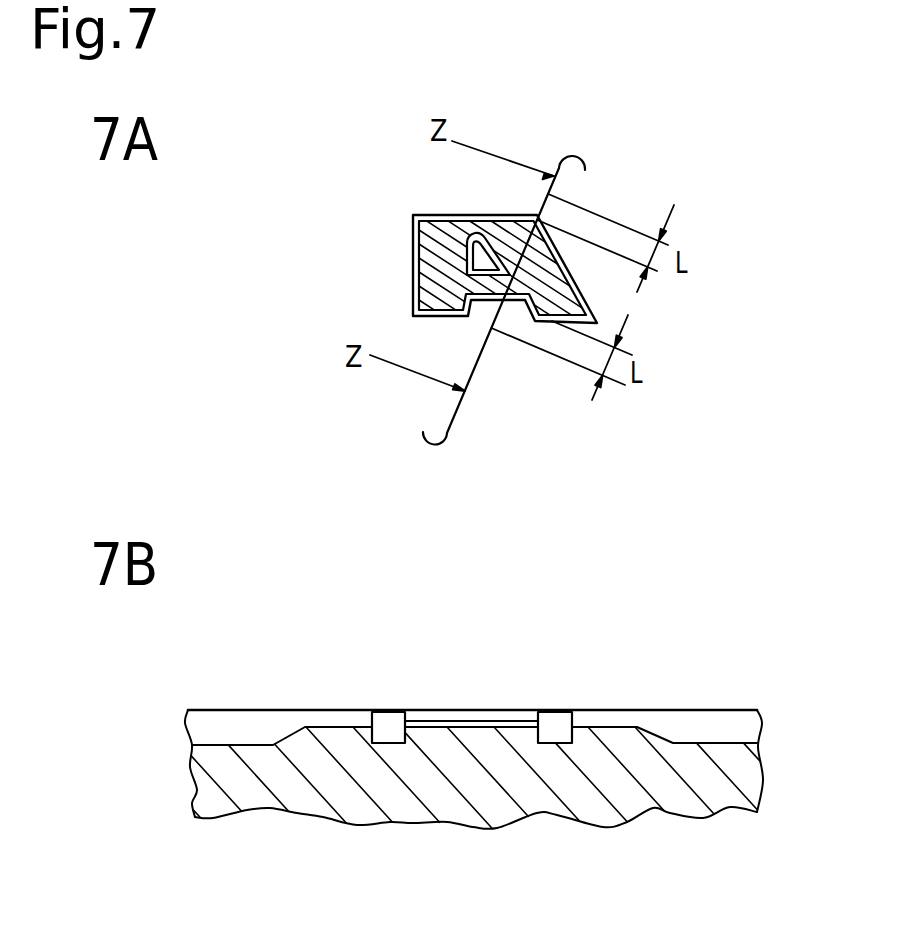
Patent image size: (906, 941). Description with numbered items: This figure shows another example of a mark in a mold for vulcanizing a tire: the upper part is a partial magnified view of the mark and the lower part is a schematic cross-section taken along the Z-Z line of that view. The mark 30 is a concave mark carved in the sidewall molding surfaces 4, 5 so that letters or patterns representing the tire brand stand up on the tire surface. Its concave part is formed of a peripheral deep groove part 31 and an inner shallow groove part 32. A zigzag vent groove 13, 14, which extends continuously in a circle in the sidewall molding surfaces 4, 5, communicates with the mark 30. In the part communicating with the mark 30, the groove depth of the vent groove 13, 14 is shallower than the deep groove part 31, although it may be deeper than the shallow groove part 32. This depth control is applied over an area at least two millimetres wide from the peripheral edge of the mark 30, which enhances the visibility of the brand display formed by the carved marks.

The concave mark 30 is at (443, 457).
The peripheral deep groove part 31 is at (418, 266).
The inner shallow groove part 32 is at (437, 292).
The vent groove 13 is at (472, 410).
The vent groove 14 is at (580, 157).
The sidewall molding surface 4 is at (517, 720).
The sidewall molding surface 5 is at (722, 705).